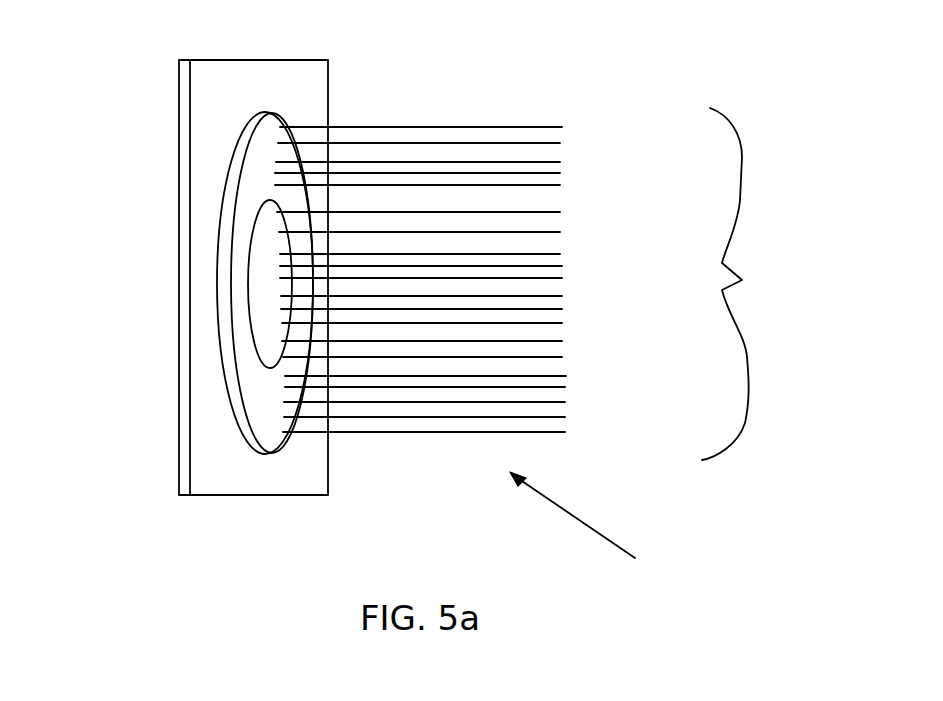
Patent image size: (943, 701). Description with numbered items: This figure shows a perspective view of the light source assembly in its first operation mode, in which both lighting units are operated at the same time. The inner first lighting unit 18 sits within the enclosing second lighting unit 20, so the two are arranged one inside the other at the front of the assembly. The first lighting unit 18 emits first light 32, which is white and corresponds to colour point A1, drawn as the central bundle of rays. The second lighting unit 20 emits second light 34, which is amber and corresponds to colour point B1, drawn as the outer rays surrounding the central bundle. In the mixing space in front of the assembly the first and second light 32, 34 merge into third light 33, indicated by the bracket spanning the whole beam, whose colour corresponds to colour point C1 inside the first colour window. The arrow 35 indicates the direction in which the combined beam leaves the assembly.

The first lighting unit 18 is at (250, 298).
The second lighting unit 20 is at (263, 188).
The first light 32 is at (560, 267).
The third light 33 is at (755, 284).
The second light 34 is at (377, 140).
The direction of light propagation 35 is at (596, 526).